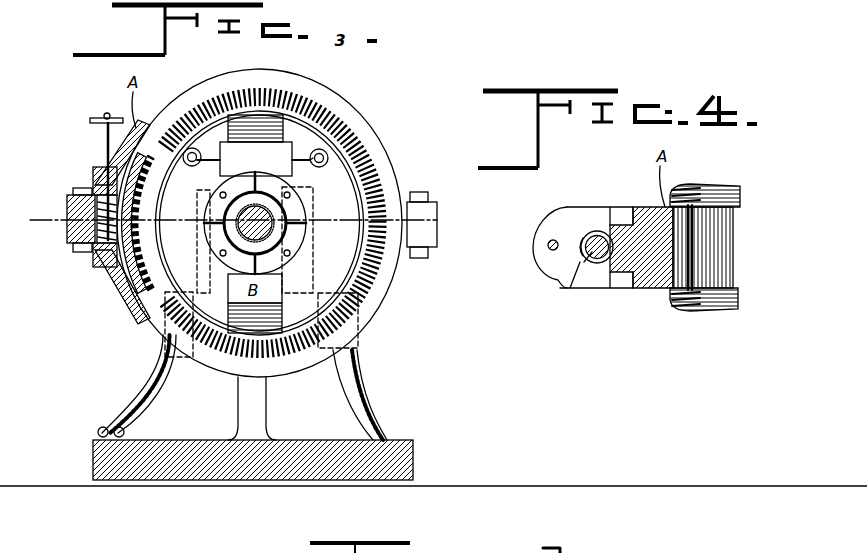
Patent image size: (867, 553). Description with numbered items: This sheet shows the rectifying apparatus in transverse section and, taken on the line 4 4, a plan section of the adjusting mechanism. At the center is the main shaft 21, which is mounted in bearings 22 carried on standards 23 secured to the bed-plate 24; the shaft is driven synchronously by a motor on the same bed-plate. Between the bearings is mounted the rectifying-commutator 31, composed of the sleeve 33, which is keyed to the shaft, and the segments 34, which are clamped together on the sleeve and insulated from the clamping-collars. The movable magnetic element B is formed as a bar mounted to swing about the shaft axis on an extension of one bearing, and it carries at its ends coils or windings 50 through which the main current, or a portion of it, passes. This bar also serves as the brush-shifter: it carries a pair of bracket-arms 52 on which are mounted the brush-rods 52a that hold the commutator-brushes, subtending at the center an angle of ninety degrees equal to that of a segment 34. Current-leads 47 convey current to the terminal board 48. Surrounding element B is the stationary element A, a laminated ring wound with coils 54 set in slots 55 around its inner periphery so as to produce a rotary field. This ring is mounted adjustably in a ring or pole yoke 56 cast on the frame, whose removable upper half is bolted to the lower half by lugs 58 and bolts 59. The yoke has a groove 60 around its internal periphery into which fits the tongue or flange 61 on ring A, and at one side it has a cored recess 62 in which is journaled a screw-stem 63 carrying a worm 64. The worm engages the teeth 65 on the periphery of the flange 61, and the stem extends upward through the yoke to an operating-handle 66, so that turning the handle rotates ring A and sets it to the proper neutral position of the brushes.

In FIG. 3, the line 4 4 is at (226, 214).
In FIG. 3, the main shaft 21 is at (238, 222).
In FIG. 3, the bearings 22 is at (318, 168).
In FIG. 3, the standards 23 is at (275, 400).
In FIG. 3, the bed-plate 24 is at (228, 482).
In FIG. 3, the rectifying-commutator 31 is at (290, 226).
In FIG. 3, the sleeve 33 is at (243, 233).
In FIG. 3, the segments 34 is at (291, 198).
In FIG. 3, the current-leads 47 is at (128, 427).
In FIG. 3, the terminal board 48 is at (156, 332).
In FIG. 3, the coils or windings 50 is at (250, 136).
In FIG. 3, the bracket-arms 52 is at (210, 158).
In FIG. 3, the brush-rods 52a is at (190, 166).
In FIG. 3, the coils 54 is at (347, 127).
In FIG. 4, the coils 54 is at (705, 188).
In FIG. 3, the slots 55 is at (140, 264).
In FIG. 4, the slots 55 is at (672, 292).
In FIG. 3, the ring or pole yoke 56 is at (312, 92).
In FIG. 4, the ring or pole yoke 56 is at (620, 210).
In FIG. 3, the lugs 58 is at (437, 210).
In FIG. 4, the lugs 58 is at (545, 275).
In FIG. 3, the bolts 59 is at (420, 192).
In FIG. 4, the bolts 59 is at (547, 244).
In FIG. 4, the groove 60 is at (620, 290).
In FIG. 4, the tongue or flange 61 is at (592, 258).
In FIG. 3, the cored recess 62 is at (95, 180).
In FIG. 4, the cored recess 62 is at (580, 262).
In FIG. 3, the screw-stem 63 is at (105, 142).
In FIG. 3, the worm 64 is at (70, 192).
In FIG. 4, the worm 64 is at (584, 234).
In FIG. 3, the teeth 65 is at (120, 276).
In FIG. 4, the teeth 65 is at (598, 231).
In FIG. 3, the operating-handle 66 is at (98, 118).